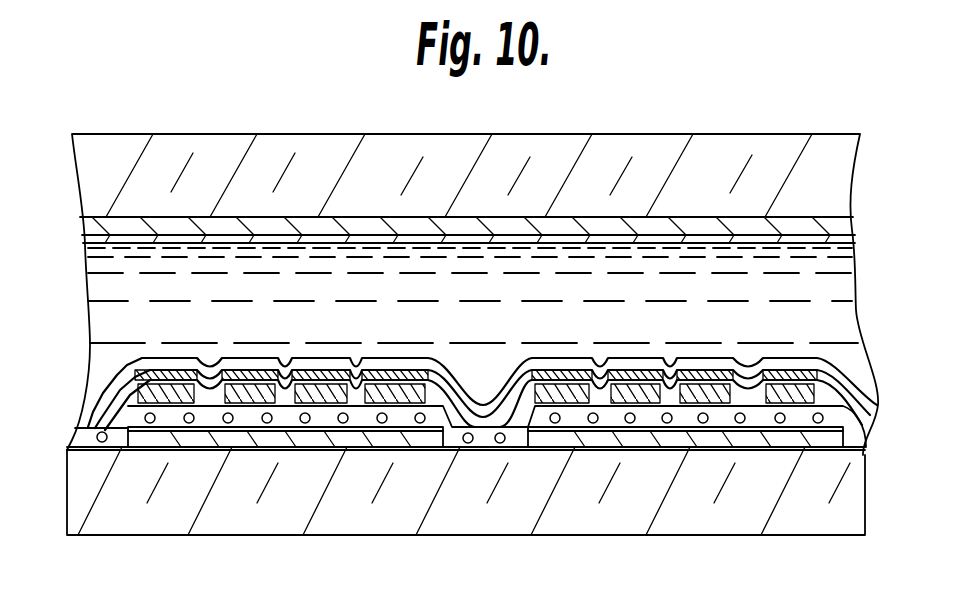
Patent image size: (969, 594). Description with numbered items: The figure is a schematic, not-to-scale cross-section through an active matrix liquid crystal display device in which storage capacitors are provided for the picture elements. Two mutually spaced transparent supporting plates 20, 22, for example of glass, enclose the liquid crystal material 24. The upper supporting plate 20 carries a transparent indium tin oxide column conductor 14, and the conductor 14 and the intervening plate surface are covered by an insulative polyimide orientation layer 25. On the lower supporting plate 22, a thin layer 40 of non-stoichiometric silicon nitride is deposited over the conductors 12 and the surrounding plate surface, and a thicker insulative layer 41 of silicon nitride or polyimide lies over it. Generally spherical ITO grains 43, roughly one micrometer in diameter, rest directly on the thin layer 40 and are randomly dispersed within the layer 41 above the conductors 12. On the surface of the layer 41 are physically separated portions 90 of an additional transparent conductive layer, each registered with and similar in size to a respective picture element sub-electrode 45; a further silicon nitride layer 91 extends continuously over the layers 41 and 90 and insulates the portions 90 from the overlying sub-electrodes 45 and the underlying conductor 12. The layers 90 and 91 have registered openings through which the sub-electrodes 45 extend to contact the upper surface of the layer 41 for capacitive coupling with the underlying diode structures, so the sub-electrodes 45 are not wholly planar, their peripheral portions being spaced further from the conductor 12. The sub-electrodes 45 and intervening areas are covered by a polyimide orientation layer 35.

The upper supporting plate 20 is at (760, 147).
The column conductor 14 is at (833, 222).
The insulative orientation layer 25 is at (838, 248).
The liquid crystal material 24 is at (838, 285).
The polyimide orientation layer 35 is at (855, 388).
The layer portions 90 is at (247, 398).
The picture element sub-electrode 45 is at (322, 398).
The further silicon nitride layer 91 is at (140, 385).
The ITO grains 43 is at (100, 442).
The thin layer 40 is at (178, 432).
The layer of insulative material 41 is at (400, 435).
The conductor 12 is at (250, 450).
The lower supporting plate 22 is at (825, 520).